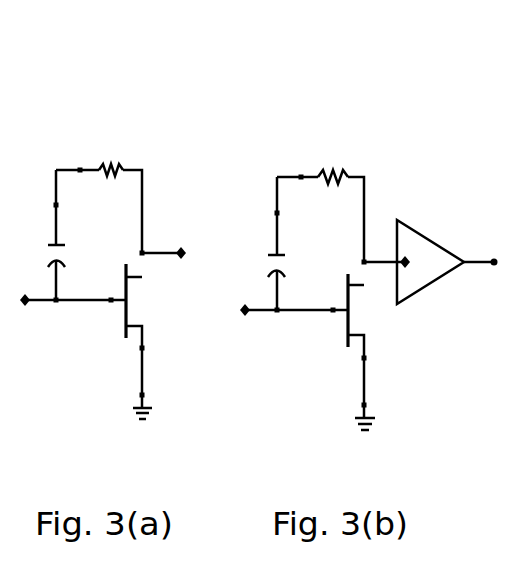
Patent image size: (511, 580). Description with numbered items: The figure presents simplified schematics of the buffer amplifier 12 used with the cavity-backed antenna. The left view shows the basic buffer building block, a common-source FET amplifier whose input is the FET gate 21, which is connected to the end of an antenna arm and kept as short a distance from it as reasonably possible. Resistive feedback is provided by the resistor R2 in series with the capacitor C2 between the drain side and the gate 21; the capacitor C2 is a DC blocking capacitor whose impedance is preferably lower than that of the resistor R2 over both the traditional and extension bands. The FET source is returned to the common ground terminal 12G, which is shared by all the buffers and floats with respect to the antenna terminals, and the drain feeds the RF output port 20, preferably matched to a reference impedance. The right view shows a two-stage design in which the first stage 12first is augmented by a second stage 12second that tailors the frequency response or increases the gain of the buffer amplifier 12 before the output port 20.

In FIG. 3A, the buffer amplifier 12 is at (38, 167).
In FIG. 3B, the buffer amplifier 12 is at (334, 269).
In FIG. 3B, the first stage 12first is at (254, 175).
In FIG. 3B, the second stage 12second is at (418, 263).
In FIG. 3A, the common ground terminal 12G is at (146, 406).
In FIG. 3B, the common ground terminal 12G is at (368, 416).
In FIG. 3A, the RF output port 20 is at (163, 247).
In FIG. 3B, the RF output port 20 is at (470, 246).
In FIG. 3A, the FET gate 21 is at (110, 302).
In FIG. 3B, the FET gate 21 is at (333, 312).
In FIG. 3A, the resistor R2 is at (109, 155).
In FIG. 3B, the resistor R2 is at (331, 163).
In FIG. 3A, the capacitor C2 is at (38, 272).
In FIG. 3B, the capacitor C2 is at (257, 282).